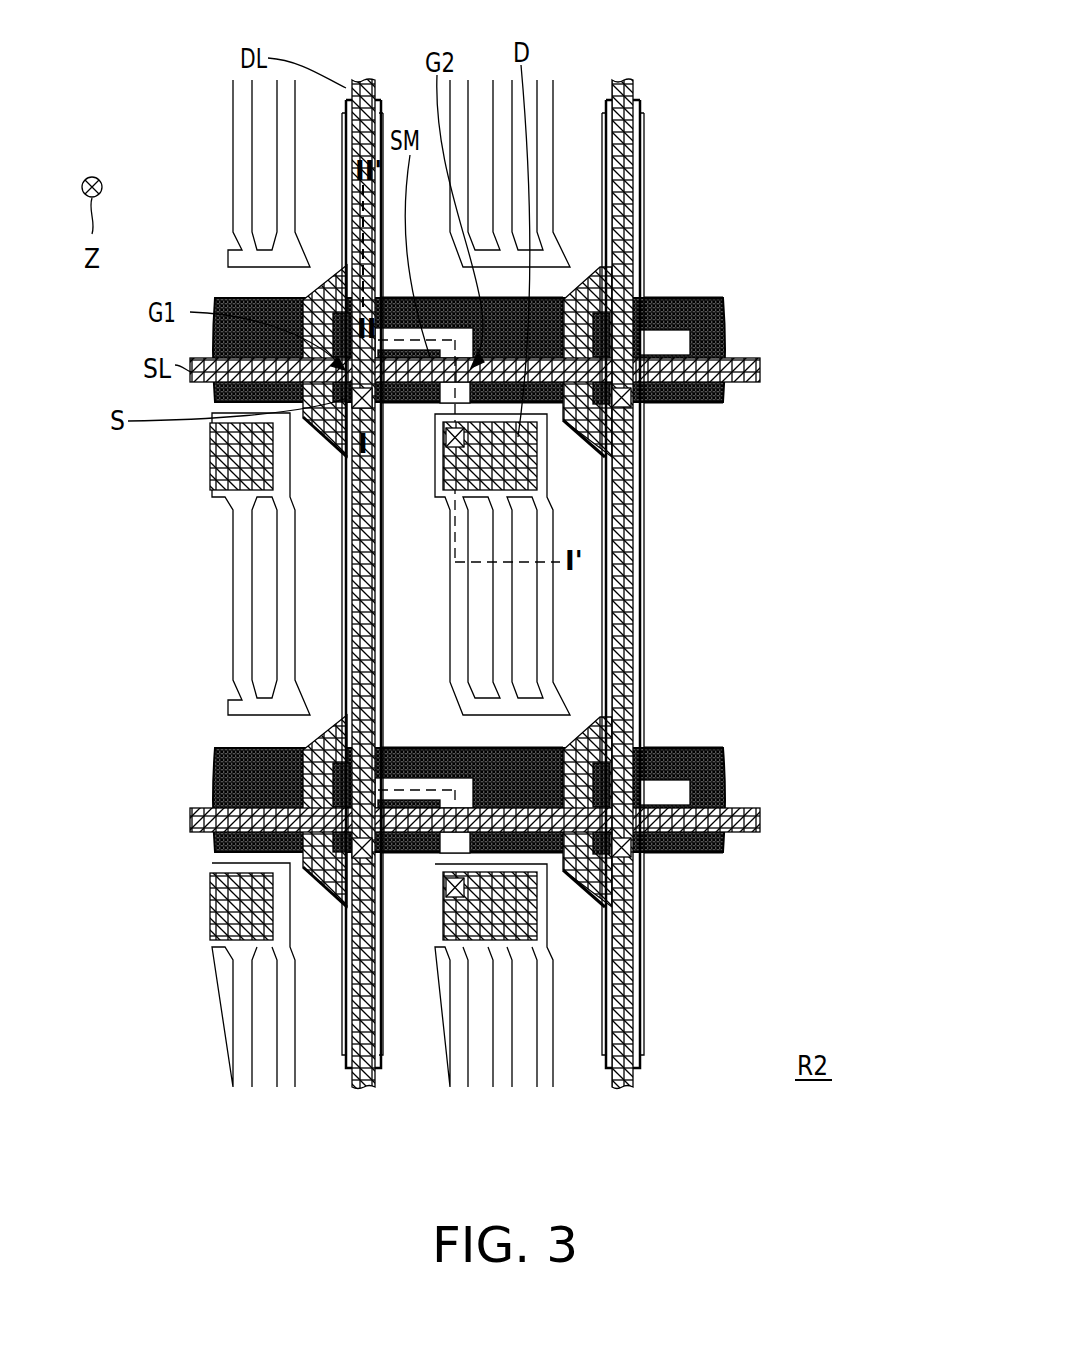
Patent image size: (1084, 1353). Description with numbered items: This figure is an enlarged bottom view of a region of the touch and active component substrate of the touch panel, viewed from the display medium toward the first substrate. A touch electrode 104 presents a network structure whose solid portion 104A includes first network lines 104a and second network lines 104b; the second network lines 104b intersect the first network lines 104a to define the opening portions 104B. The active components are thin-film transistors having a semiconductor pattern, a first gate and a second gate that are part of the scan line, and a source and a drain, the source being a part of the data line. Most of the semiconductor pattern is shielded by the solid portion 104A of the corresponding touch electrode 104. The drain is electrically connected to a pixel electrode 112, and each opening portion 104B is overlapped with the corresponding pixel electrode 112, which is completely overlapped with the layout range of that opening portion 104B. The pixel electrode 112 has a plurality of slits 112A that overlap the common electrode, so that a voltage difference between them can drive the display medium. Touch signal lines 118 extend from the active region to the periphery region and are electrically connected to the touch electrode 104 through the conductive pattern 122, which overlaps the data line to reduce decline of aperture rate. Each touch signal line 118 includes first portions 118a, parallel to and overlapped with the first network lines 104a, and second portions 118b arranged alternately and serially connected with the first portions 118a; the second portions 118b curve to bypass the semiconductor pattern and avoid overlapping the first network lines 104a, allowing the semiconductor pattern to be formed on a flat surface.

The touch electrode 104 is at (878, 222).
The first network lines 104a is at (645, 200).
The second network lines 104b is at (687, 300).
The solid portion 104A is at (795, 182).
The opening portions 104B is at (572, 473).
The pixel electrode 112 is at (553, 585).
The slits 112A is at (533, 609).
The touch signal lines 118 is at (148, 88).
The first portions 118a is at (345, 125).
The second portions 118b is at (333, 272).
The conductive pattern 122 is at (337, 297).